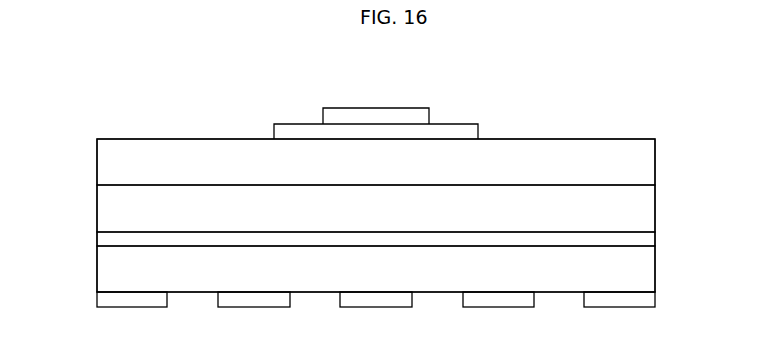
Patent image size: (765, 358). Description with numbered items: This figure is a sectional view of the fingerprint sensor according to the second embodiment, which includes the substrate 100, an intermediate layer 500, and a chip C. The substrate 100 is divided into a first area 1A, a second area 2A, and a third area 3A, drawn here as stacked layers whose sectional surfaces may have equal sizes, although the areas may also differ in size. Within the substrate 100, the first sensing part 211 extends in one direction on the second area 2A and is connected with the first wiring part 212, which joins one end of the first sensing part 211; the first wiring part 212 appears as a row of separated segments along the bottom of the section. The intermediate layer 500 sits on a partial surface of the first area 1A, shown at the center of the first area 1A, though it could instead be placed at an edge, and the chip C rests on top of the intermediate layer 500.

The substrate 100 is at (716, 167).
The first area 1A is at (655, 163).
The second area 2A is at (655, 212).
The third area 3A is at (655, 261).
The first sensing part 211 is at (99, 239).
The first wiring part 212 is at (100, 298).
The intermediate layer 500 is at (457, 130).
The chip C is at (378, 112).